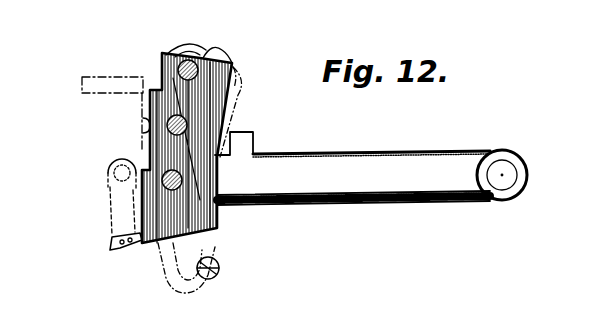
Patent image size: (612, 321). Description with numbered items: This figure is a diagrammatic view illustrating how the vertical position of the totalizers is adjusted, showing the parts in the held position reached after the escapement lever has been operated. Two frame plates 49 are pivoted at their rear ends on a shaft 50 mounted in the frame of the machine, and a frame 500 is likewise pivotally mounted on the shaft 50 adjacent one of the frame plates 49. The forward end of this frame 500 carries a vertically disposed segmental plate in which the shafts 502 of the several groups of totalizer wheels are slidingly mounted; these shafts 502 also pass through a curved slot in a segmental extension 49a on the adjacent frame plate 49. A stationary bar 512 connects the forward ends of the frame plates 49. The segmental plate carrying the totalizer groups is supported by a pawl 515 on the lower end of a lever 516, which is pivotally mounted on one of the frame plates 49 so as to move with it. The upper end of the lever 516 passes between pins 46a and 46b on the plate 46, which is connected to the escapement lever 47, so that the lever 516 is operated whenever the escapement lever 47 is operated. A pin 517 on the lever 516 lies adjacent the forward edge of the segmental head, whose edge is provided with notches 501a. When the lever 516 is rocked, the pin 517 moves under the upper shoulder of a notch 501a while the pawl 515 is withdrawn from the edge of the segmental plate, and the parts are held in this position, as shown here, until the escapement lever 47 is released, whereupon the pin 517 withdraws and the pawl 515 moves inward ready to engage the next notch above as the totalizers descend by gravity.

The sliding bar 46 is at (231, 63).
The pin 46a is at (147, 83).
The pin 46b is at (165, 66).
The escapement lever 47 is at (236, 112).
The frame plates 49 is at (361, 190).
The segmental extension 49a is at (170, 282).
The shaft 50 is at (502, 174).
The frame 500 is at (431, 153).
The notches 501a is at (135, 152).
The shafts 502 is at (193, 61).
The stationary bar 512 is at (246, 151).
The pawl 515 is at (127, 254).
The lever 516 is at (108, 203).
The pin 517 is at (143, 124).